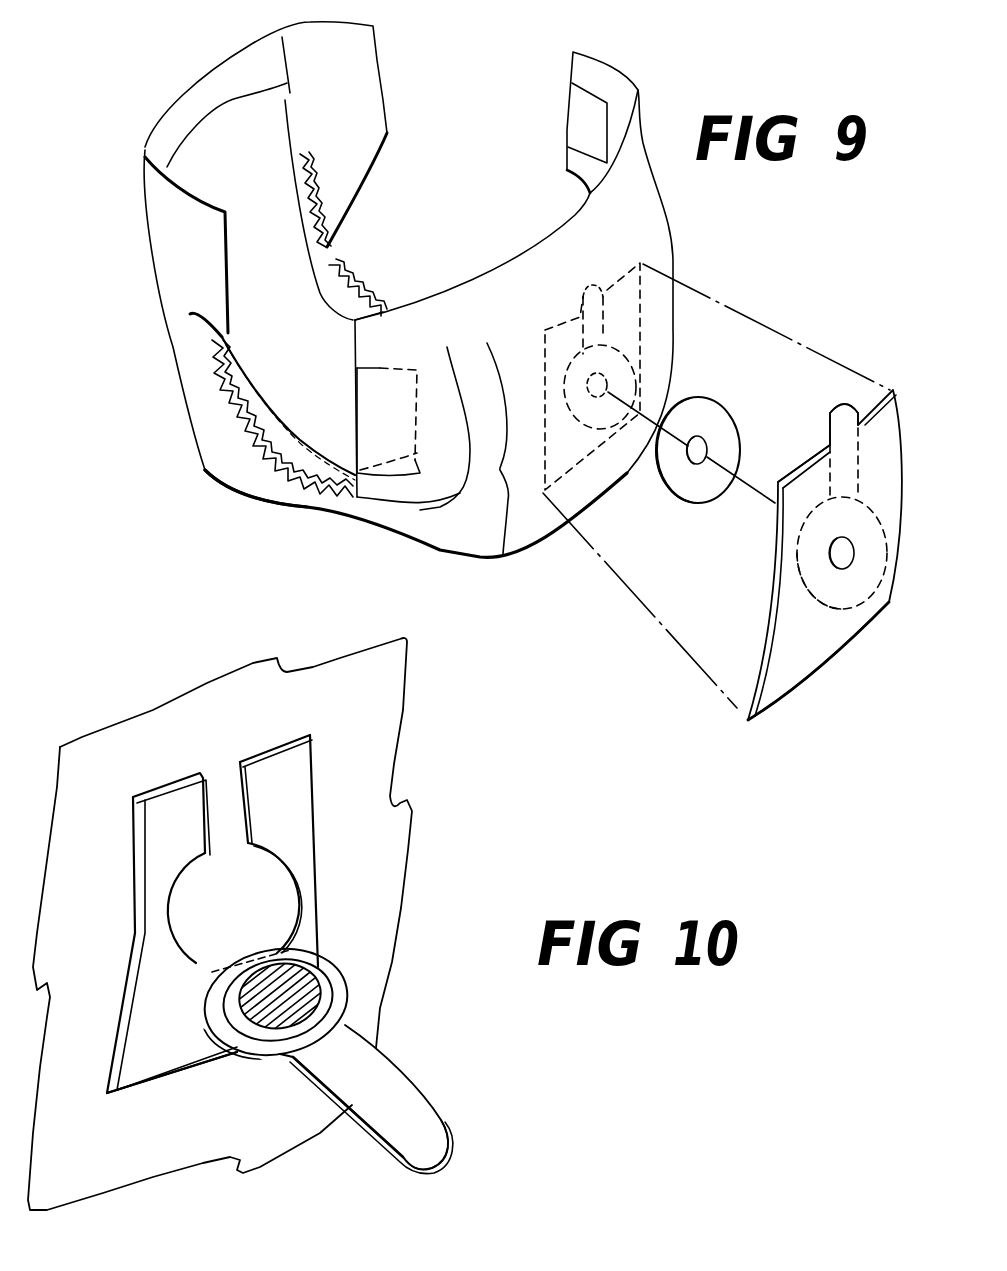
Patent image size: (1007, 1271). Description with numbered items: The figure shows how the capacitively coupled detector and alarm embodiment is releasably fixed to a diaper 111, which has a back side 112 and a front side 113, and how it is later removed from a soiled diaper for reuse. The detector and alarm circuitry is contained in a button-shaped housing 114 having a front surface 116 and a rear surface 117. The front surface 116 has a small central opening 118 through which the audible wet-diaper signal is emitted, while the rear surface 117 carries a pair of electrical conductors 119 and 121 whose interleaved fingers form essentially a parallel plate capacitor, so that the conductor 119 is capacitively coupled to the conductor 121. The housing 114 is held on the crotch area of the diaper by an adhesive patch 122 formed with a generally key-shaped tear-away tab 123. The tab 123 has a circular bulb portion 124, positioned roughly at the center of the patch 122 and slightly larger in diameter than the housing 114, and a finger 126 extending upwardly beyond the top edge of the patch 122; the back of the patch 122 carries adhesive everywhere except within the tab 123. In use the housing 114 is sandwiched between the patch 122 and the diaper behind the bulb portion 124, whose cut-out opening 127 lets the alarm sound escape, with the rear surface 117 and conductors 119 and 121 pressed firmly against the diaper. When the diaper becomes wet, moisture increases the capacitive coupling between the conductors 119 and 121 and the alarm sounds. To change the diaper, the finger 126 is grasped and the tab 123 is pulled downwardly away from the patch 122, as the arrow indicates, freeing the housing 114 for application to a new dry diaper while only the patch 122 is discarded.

In FIG. 9, the diaper 111 is at (285, 533).
In FIG. 9, the back side 112 is at (170, 82).
In FIG. 9, the front side 113 is at (650, 232).
In FIG. 10, the front side 113 is at (196, 750).
In FIG. 9, the button-shaped housing 114 is at (709, 391).
In FIG. 9, the front surface 116 is at (688, 492).
In FIG. 10, the rear surface 117 is at (256, 965).
In FIG. 9, the central opening 118 is at (704, 448).
In FIG. 10, the electrical conductor 119 is at (330, 967).
In FIG. 10, the electrical conductor 121 is at (243, 993).
In FIG. 9, the adhesive patch 122 is at (896, 622).
In FIG. 10, the adhesive patch 122 is at (290, 842).
In FIG. 9, the tear-away tab 123 is at (827, 486).
In FIG. 10, the tear-away tab 123 is at (360, 1053).
In FIG. 9, the circular bulb portion 124 is at (822, 590).
In FIG. 10, the circular bulb portion 124 is at (227, 1027).
In FIG. 9, the finger 126 is at (850, 410).
In FIG. 10, the finger 126 is at (405, 1215).
In FIG. 9, the cut-out opening 127 is at (828, 556).